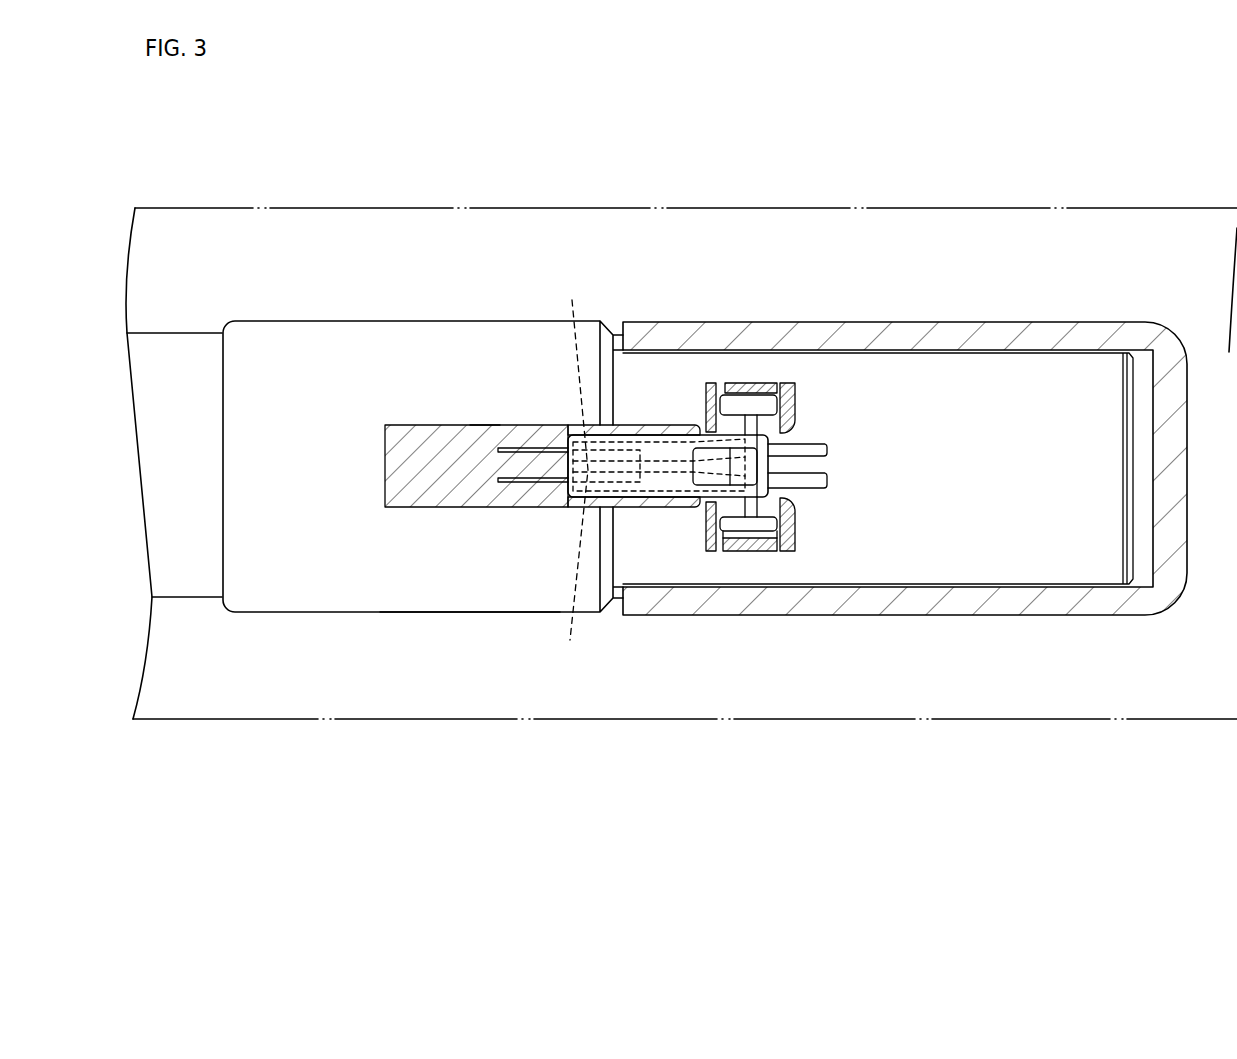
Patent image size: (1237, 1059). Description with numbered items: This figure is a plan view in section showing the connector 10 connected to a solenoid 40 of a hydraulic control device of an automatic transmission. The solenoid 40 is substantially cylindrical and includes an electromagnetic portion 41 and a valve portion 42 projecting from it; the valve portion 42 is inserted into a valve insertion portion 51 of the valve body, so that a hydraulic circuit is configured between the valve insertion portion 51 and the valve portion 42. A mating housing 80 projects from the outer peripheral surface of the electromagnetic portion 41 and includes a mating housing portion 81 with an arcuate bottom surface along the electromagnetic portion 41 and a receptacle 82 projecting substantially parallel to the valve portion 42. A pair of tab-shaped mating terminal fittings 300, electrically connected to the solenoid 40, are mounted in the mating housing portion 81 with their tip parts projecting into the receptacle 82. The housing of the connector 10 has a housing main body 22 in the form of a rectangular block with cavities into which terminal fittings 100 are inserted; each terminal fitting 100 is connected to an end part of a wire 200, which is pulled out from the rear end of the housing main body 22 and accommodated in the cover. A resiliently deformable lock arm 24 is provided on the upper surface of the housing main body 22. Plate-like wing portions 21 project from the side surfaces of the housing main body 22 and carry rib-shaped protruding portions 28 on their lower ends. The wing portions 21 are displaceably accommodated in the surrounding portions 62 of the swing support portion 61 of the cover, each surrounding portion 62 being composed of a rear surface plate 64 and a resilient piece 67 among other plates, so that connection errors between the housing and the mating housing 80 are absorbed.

The connector 10 is at (892, 430).
The wing portion 21 is at (728, 398).
The housing main body 22 is at (658, 440).
The lock arm 24 is at (657, 482).
The protruding portion 28 is at (766, 395).
The solenoid 40 is at (306, 320).
The electromagnetic portion 41 is at (439, 600).
The valve portion 42 is at (1000, 572).
The valve insertion portion 51 is at (1028, 332).
The swing support portion 61 is at (787, 388).
The surrounding portion 62 is at (794, 413).
The rear surface plate 64 is at (799, 427).
The resilient piece 67 is at (746, 388).
The mating housing 80 is at (424, 425).
The mating housing portion 81 is at (483, 433).
The receptacle 82 is at (632, 428).
The terminal fitting 100 is at (568, 469).
The wire 200 is at (828, 445).
The mating terminal fitting 300 is at (528, 448).